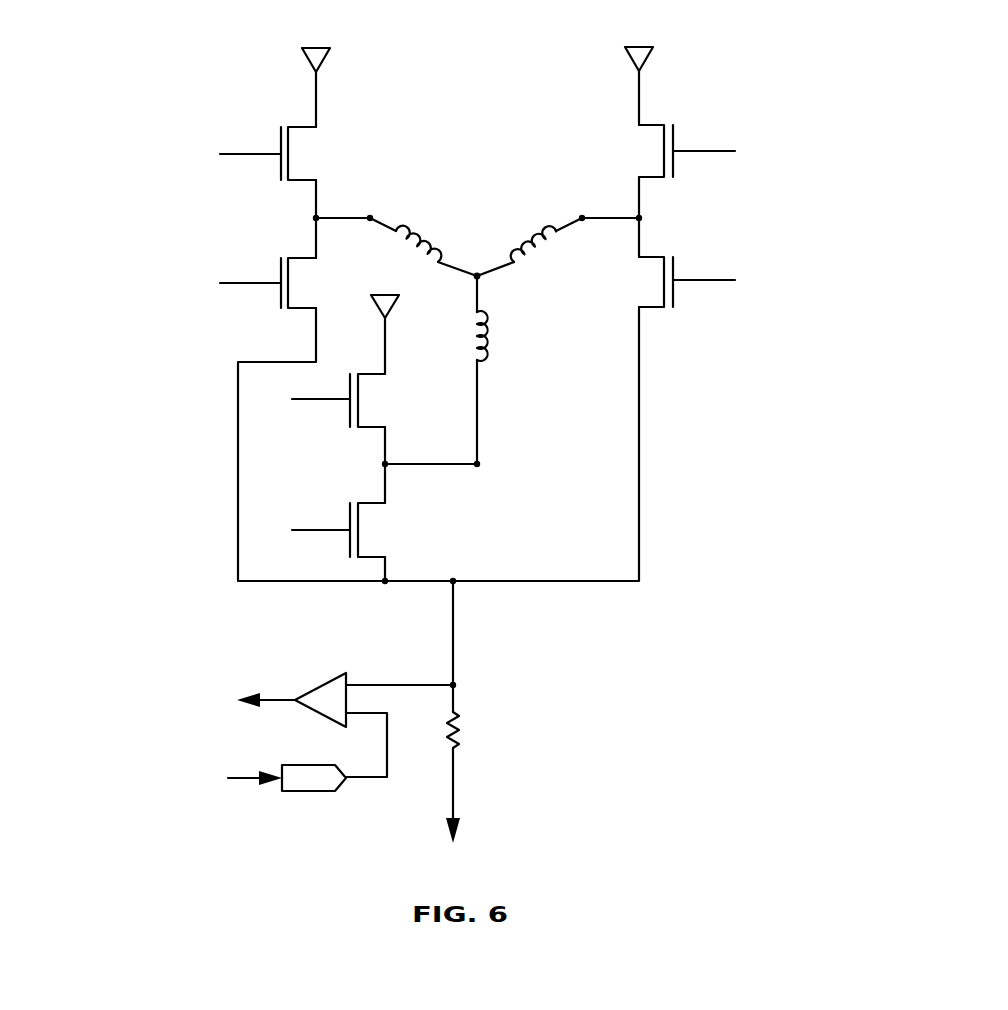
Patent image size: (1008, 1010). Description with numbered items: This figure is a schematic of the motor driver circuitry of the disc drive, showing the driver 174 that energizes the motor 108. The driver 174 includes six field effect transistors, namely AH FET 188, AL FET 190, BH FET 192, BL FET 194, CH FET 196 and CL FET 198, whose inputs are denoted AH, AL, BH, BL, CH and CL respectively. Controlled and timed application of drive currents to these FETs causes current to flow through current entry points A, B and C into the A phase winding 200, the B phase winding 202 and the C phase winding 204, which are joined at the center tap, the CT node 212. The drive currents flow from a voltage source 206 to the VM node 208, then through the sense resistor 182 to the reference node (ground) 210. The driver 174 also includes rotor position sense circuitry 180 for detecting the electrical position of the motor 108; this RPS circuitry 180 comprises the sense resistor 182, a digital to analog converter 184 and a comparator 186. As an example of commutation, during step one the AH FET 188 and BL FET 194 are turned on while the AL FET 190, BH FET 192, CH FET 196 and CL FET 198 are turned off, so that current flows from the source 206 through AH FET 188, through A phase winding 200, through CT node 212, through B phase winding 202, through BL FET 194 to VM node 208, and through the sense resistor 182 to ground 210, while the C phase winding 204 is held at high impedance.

The driver 174 is at (272, 34).
The voltage source 206 is at (317, 46).
The AH FET 188 is at (282, 135).
The AL FET 190 is at (282, 265).
The BH FET 192 is at (676, 140).
The BL FET 194 is at (676, 295).
The CH FET 196 is at (348, 420).
The CL FET 198 is at (350, 556).
The motor 108 is at (478, 205).
The A phase winding 200 is at (400, 236).
The B phase winding 202 is at (530, 256).
The C phase winding 204 is at (482, 356).
The CT node 212 is at (471, 281).
The VM node 208 is at (447, 552).
The rotor position sense circuitry 180 is at (545, 702).
The sense resistor 182 is at (460, 738).
The comparator 186 is at (325, 686).
The digital to analog converter 184 is at (320, 793).
The reference node 210 is at (458, 848).